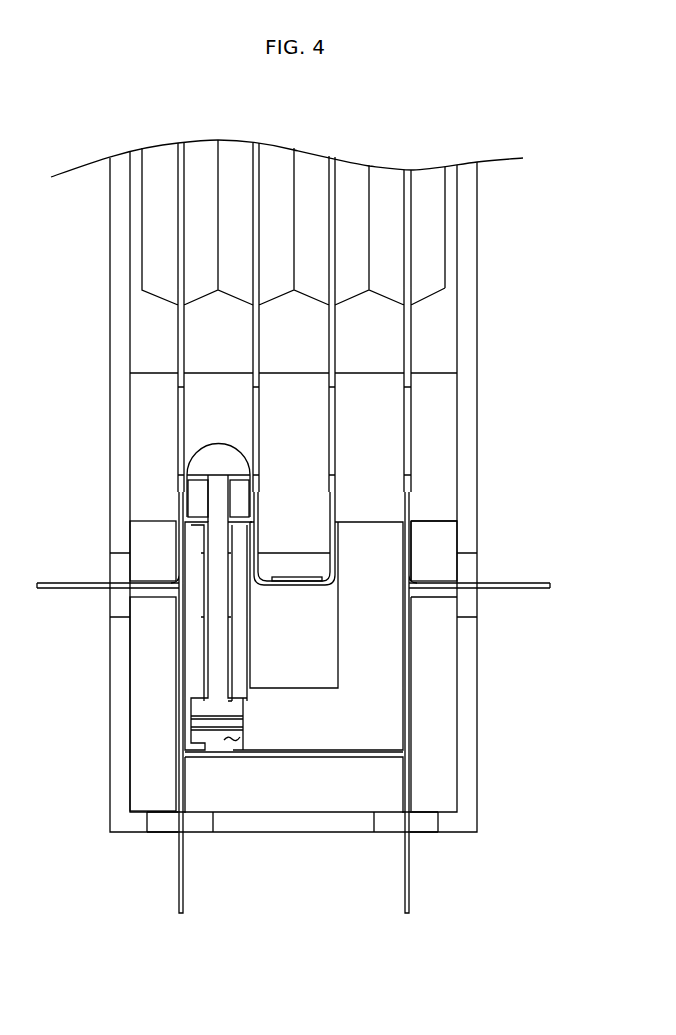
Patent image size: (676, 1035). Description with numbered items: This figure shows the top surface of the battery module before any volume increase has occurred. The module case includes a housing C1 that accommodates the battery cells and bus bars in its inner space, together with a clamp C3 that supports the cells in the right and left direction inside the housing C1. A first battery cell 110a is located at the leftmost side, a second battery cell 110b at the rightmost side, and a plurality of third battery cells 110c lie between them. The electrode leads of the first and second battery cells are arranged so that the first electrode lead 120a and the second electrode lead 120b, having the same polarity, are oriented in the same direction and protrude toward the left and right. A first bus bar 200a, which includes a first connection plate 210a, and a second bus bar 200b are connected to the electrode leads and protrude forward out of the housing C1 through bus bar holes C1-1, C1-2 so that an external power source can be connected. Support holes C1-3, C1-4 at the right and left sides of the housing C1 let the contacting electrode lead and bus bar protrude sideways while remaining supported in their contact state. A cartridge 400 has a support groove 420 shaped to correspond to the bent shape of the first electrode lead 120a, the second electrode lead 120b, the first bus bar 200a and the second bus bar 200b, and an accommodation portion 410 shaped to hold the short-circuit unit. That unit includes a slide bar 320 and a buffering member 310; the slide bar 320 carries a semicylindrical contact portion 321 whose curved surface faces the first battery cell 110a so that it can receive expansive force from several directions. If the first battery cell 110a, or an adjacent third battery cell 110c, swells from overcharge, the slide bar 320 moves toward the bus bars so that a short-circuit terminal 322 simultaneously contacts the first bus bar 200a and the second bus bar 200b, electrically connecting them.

The housing C1 is at (118, 165).
The clamp C3 is at (137, 165).
The first battery cell 110a is at (201, 150).
The second battery cell 110b is at (312, 160).
The third battery cell 110c is at (388, 170).
The first bus bar 200a is at (180, 918).
The second bus bar 200b is at (407, 918).
The contact portion 321 is at (205, 459).
The buffering member 310 is at (238, 493).
The slide bar 320 is at (207, 688).
The short-circuit terminal 322 is at (205, 722).
The accommodation portion 410 is at (231, 742).
The cartridge 400 is at (370, 720).
The first electrode lead 120a is at (173, 508).
The first connection plate 210a is at (177, 613).
The second electrode lead 120b is at (410, 505).
The support groove 420 is at (178, 580).
The bus bar hole C1-1 is at (163, 823).
The bus bar hole C1-2 is at (422, 823).
The support hole C1-3 is at (115, 605).
The support hole C1-4 is at (470, 607).